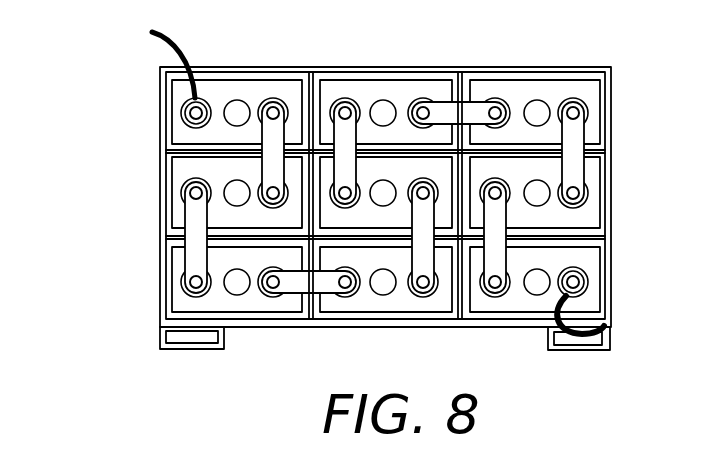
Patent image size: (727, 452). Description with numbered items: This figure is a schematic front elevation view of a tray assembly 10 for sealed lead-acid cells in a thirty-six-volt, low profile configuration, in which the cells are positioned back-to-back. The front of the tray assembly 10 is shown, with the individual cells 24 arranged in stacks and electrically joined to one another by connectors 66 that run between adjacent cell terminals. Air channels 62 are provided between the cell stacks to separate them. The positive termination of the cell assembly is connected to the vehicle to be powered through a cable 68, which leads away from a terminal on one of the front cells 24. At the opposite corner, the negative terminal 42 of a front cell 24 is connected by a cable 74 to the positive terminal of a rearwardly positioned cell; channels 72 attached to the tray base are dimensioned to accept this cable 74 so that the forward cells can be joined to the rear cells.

The tray assembly 10 is at (140, 126).
The cell 24 is at (278, 90).
The negative terminal 42 is at (592, 284).
The air channel 62 is at (310, 304).
The connector 66 is at (196, 260).
The cable 68 is at (178, 44).
The channel 72 is at (178, 350).
The cable 74 is at (580, 334).